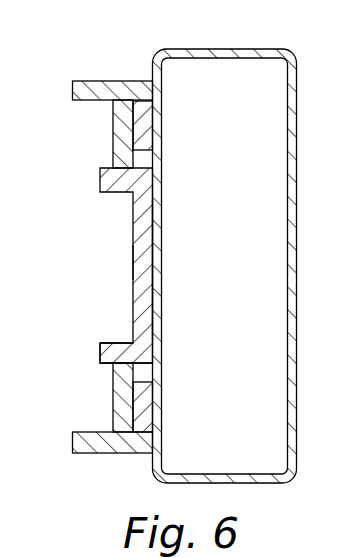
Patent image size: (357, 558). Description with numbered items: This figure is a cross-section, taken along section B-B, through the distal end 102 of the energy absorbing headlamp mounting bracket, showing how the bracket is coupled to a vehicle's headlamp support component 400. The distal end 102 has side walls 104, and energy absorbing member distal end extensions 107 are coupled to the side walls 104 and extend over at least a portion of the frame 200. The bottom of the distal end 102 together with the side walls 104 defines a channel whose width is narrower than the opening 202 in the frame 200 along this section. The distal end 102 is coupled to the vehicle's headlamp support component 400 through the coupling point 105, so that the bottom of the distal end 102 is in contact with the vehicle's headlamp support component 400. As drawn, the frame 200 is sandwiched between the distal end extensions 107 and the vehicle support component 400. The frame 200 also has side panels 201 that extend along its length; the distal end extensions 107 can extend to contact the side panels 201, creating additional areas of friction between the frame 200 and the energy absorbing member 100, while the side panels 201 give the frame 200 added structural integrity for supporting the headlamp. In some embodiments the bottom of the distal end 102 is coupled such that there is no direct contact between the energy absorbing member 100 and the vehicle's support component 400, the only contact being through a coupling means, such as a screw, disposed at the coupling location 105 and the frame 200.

The vehicle's headlamp support component 400 is at (227, 49).
The energy absorbing member distal end extensions 107 is at (113, 140).
The frame 200 is at (147, 130).
The coupling point 105 is at (131, 262).
The energy absorbing member 100 is at (132, 316).
The distal end 102 is at (148, 309).
The side walls 104 is at (108, 353).
The opening 202 is at (147, 373).
The side panels 201 is at (100, 437).